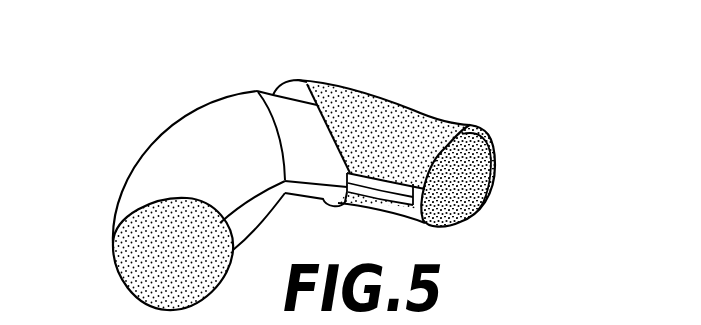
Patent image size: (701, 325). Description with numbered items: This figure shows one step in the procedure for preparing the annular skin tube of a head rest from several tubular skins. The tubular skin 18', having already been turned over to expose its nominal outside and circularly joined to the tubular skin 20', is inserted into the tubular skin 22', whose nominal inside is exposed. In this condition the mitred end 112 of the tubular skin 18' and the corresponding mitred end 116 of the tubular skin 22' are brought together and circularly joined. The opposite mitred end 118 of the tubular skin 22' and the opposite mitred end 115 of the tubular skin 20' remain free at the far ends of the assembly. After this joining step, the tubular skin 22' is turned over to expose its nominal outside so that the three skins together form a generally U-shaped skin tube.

The tubular skin 20' is at (230, 170).
The mitred end 115 is at (123, 217).
The mitred end 118 is at (313, 82).
The tubular skin 22' is at (400, 88).
The tubular skin 18' is at (388, 124).
The mitred end 112 is at (483, 185).
The mitred end 116 is at (486, 126).